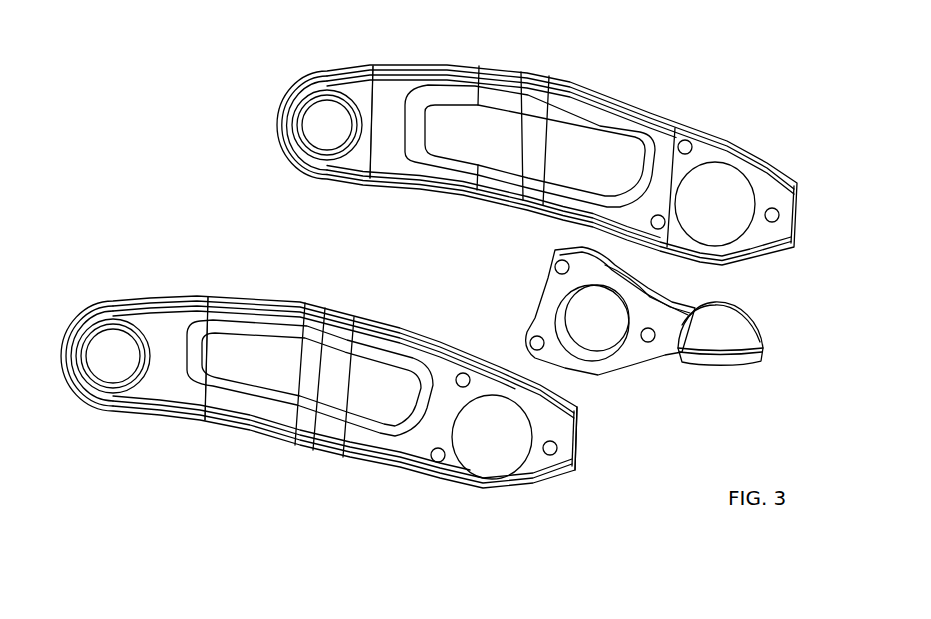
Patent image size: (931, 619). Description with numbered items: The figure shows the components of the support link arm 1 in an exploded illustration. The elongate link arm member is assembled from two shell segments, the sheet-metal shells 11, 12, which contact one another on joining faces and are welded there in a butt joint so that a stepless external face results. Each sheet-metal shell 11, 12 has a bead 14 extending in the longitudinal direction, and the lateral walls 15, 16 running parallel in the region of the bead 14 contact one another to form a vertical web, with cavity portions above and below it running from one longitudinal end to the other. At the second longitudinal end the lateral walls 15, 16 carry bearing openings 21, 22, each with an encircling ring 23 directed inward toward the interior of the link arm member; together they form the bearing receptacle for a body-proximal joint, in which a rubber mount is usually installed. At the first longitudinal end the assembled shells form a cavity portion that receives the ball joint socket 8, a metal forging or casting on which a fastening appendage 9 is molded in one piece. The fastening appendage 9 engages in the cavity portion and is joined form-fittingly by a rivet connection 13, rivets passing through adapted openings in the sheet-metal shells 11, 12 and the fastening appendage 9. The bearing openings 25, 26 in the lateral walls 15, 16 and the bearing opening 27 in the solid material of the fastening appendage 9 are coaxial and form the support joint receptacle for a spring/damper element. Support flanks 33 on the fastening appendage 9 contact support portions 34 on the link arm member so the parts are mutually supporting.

The support link arm 1 is at (707, 80).
The ball joint socket 8 is at (754, 318).
The fastening appendage 9 is at (635, 357).
The sheet-metal shell 11 is at (395, 322).
The sheet-metal shell 12 is at (606, 97).
The rivet connection 13 is at (432, 462).
The bead 14 is at (495, 110).
The lateral wall 15 is at (387, 78).
The lateral wall 16 is at (152, 320).
The bearing opening 21 is at (88, 386).
The bearing opening 22 is at (296, 157).
The encircling ring 23 is at (349, 180).
The bearing opening 25 is at (474, 458).
The bearing opening 26 is at (733, 157).
The bearing opening 27 is at (604, 345).
The support flank 33 is at (614, 261).
The support portion 34 is at (582, 413).